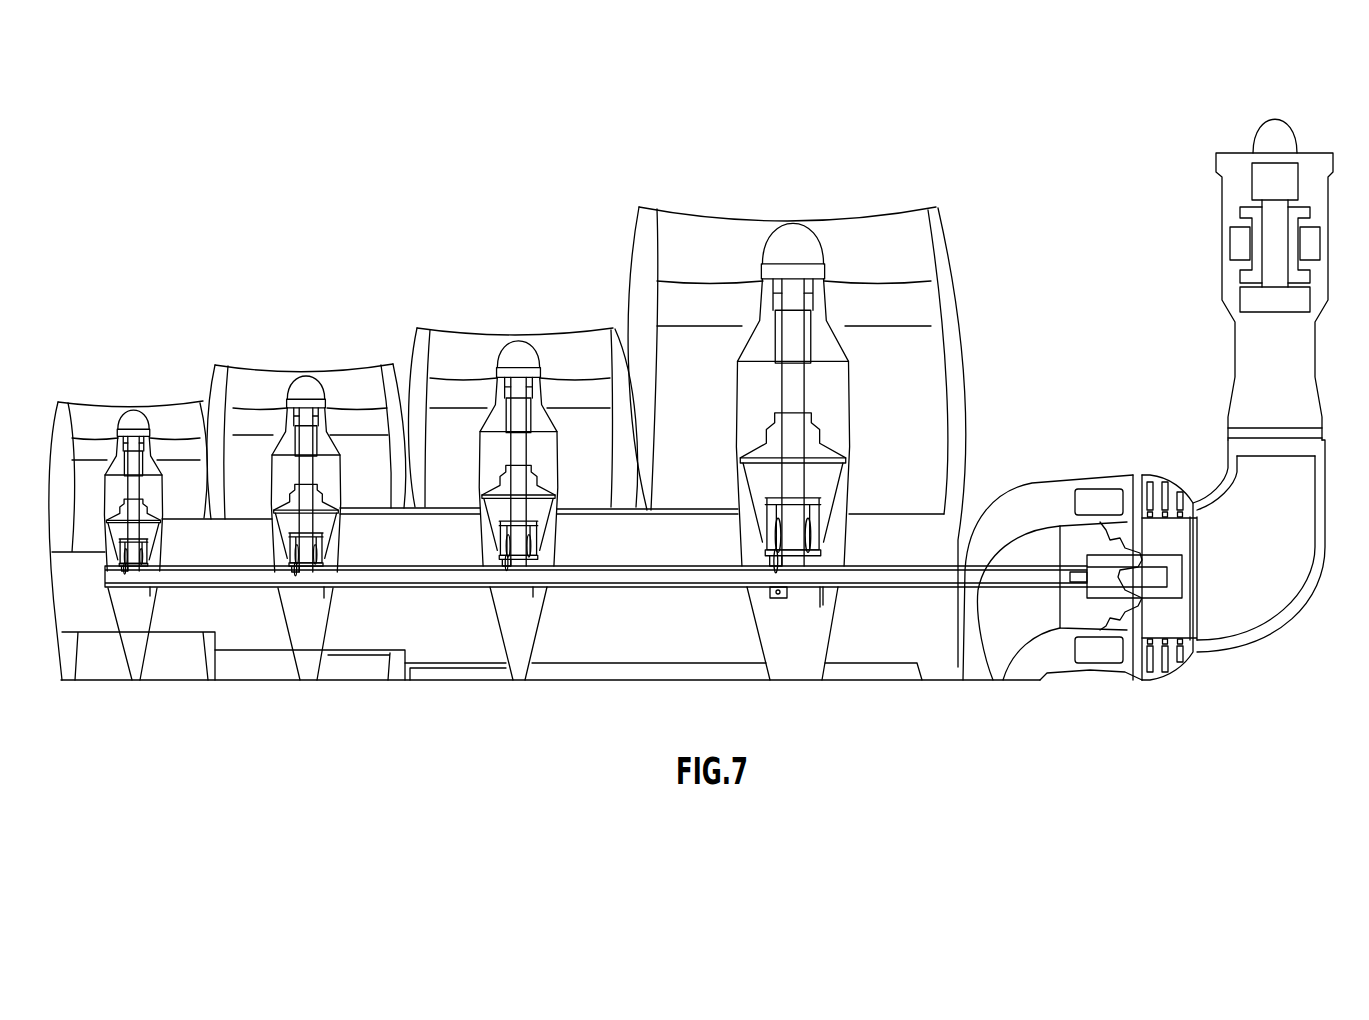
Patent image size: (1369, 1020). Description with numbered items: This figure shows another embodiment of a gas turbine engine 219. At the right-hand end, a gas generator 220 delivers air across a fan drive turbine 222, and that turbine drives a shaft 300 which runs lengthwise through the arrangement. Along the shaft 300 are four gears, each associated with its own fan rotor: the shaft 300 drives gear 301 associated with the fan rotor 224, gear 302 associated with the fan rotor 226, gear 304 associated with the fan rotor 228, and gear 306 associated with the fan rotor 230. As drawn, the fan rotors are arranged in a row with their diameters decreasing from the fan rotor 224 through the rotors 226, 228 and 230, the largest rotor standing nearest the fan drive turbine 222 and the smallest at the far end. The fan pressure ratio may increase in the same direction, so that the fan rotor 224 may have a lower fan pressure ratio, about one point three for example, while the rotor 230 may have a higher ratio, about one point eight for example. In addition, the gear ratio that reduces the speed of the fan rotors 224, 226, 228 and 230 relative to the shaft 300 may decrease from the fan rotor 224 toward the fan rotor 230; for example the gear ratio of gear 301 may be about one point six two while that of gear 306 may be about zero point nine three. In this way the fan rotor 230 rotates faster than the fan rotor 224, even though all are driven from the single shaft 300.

The engine 219 is at (1052, 215).
The gas generator 220 is at (1199, 313).
The fan drive turbine 222 is at (1150, 647).
The fan rotor 224 is at (882, 299).
The fan rotor 226 is at (577, 393).
The fan rotor 228 is at (353, 422).
The fan rotor 230 is at (175, 448).
The shaft 300 is at (693, 580).
The gear 301 is at (815, 545).
The gear 302 is at (538, 553).
The gear 304 is at (324, 553).
The gear 306 is at (150, 556).